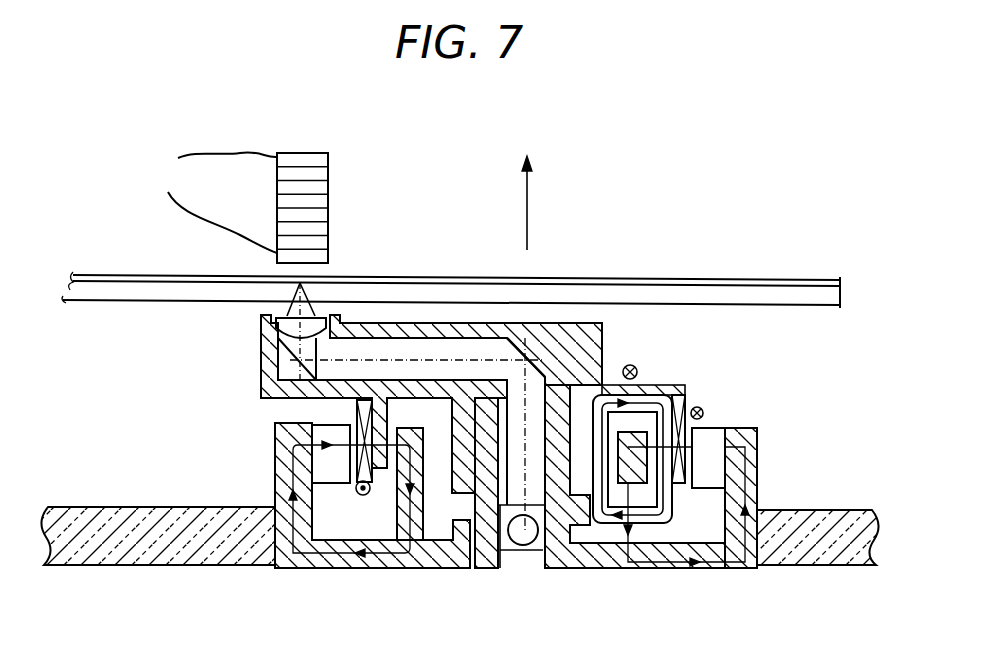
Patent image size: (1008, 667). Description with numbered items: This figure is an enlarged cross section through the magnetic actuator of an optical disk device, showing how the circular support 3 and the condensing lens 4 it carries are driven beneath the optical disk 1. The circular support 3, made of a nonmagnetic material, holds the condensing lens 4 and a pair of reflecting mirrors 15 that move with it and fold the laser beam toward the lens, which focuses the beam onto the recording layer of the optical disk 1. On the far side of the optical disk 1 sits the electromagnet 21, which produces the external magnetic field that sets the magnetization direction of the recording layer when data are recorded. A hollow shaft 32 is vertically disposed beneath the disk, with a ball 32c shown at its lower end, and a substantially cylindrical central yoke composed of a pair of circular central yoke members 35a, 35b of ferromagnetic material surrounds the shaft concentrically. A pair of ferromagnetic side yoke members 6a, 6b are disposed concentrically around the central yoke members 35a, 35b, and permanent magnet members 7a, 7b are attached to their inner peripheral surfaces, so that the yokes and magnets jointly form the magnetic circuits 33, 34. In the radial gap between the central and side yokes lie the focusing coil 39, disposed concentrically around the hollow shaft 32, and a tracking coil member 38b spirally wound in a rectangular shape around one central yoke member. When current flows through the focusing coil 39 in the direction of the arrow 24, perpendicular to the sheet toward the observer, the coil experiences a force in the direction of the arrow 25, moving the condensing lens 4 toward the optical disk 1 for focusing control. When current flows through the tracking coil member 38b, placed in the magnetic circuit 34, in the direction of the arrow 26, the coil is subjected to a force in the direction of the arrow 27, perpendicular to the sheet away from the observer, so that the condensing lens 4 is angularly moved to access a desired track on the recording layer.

The optical disk 1 is at (774, 293).
The circular support 3 is at (598, 323).
The condensing lens 4 is at (305, 320).
The reflecting mirrors 15 is at (296, 370).
The electromagnet 21 is at (328, 167).
The arrow 24 is at (363, 497).
The arrow 25 is at (530, 193).
The arrow 26 is at (663, 397).
The arrow 27 is at (632, 365).
The hollow shaft 32 is at (483, 570).
The ball 32c is at (530, 550).
The magnetic circuit 33 is at (383, 568).
The magnetic circuit 34 is at (637, 568).
The central yoke member 35a is at (432, 568).
The central yoke member 35b is at (637, 483).
The tracking coil member 38b is at (642, 398).
The focusing coil 39 is at (700, 407).
The side yoke member 6a is at (277, 568).
The side yoke member 6b is at (753, 568).
The permanent magnet member 7a is at (305, 568).
The permanent magnet member 7b is at (710, 488).